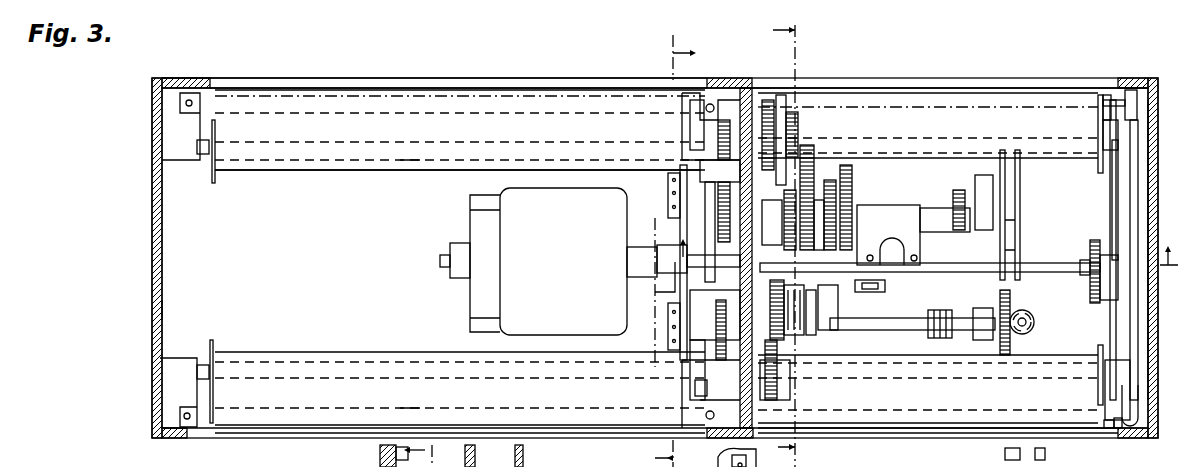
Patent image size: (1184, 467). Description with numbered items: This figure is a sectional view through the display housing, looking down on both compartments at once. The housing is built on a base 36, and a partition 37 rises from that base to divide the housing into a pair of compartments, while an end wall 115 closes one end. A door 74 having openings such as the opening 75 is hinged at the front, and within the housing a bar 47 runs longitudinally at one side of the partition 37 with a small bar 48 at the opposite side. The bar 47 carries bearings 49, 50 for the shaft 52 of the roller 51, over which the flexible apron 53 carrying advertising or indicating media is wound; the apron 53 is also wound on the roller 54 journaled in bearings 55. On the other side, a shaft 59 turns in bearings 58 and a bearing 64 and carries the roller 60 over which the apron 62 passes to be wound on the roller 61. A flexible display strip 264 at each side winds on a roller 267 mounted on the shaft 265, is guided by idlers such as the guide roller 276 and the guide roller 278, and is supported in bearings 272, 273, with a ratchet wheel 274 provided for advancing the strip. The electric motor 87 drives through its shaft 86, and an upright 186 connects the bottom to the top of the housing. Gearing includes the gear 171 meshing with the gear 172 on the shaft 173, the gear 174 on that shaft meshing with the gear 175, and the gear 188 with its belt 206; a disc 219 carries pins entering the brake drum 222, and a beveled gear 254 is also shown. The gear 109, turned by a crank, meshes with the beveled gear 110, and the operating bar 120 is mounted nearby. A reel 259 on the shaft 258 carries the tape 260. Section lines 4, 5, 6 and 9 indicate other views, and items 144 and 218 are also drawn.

The base 36 is at (183, 243).
The end wall 115 is at (165, 289).
The partition 37 is at (752, 88).
The bar 47 is at (992, 88).
The small bar 48 is at (901, 429).
The bearing 49 is at (1130, 90).
The door 74 is at (323, 80).
The guide roller 278 is at (472, 82).
The opening 75 is at (176, 438).
The shaft 265 is at (323, 172).
The flexible display strip 264 is at (405, 171).
The guide roller 276 is at (450, 414).
The roller 267 is at (215, 183).
The electric motor 87 is at (508, 228).
The shaft 86 is at (672, 240).
The shaft 258 is at (678, 222).
The tape 260 is at (668, 178).
The reel 259 is at (667, 197).
The bearing 273 is at (700, 147).
The ratchet wheel 274 is at (737, 69).
The bearing 272 is at (705, 370).
The section line 4 is at (680, 251).
The section line 5 is at (779, 244).
The section line 6 is at (929, 245).
The flexible apron 53 is at (1055, 112).
The apron 62 is at (1055, 398).
The bearing 50 is at (775, 100).
The gear 175 is at (830, 183).
The gear 171 is at (1095, 237).
The gear 172 is at (1092, 264).
The beveled gear 254 is at (792, 338).
The bearing 64 is at (790, 414).
The worm shaft 144 is at (887, 330).
The gear 174 is at (855, 288).
The upright 186 is at (894, 210).
The gear 188 is at (848, 193).
The belt 206 is at (958, 190).
The brake drum 222 is at (985, 175).
The disc 219 is at (1005, 190).
The gear 109 is at (1030, 312).
The beveled gear 110 is at (1003, 357).
The shaft 173 is at (1062, 268).
The bearing 55 is at (1115, 140).
The roller 54 is at (1100, 170).
The operating bar 120 is at (1112, 190).
The roller 51 is at (1100, 95).
The shaft 52 is at (1115, 92).
The roller 61 is at (1100, 347).
The roller 60 is at (1105, 420).
The shaft 59 is at (1114, 430).
The bearing 58 is at (1126, 420).
The mounting foot 218 is at (380, 452).
The section line 9 is at (423, 456).